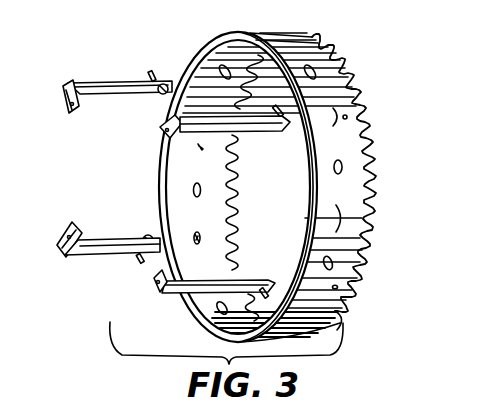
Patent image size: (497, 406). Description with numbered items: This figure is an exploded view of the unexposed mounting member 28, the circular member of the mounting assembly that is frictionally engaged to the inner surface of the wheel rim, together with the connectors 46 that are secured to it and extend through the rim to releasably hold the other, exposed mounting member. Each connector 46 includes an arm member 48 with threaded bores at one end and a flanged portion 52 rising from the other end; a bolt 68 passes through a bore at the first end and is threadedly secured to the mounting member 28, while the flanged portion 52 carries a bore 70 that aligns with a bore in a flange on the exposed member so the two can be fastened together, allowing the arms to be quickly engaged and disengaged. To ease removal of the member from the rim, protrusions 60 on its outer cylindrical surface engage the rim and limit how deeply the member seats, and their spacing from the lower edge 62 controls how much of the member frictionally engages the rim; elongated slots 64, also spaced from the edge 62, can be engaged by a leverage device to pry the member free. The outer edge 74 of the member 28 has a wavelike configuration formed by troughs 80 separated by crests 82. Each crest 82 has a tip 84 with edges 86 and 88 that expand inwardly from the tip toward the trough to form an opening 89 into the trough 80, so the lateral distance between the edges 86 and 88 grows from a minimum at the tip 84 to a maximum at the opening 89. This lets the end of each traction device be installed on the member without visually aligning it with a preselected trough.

The unexposed mounting member 28 is at (265, 36).
The connector 46 is at (152, 182).
The arm member 48 is at (112, 95).
The flanged portion 52 is at (63, 104).
The protrusion 60 is at (336, 48).
The lower edge 62 is at (304, 167).
The elongated slot 64 is at (348, 68).
The bolt 68 is at (153, 72).
The bore 70 is at (63, 90).
The outer edge 74 is at (316, 38).
The trough 80 is at (372, 225).
The crest 82 is at (375, 160).
The tip 84 is at (378, 203).
The edge 86 is at (372, 150).
The edge 88 is at (374, 155).
The opening 89 is at (368, 245).